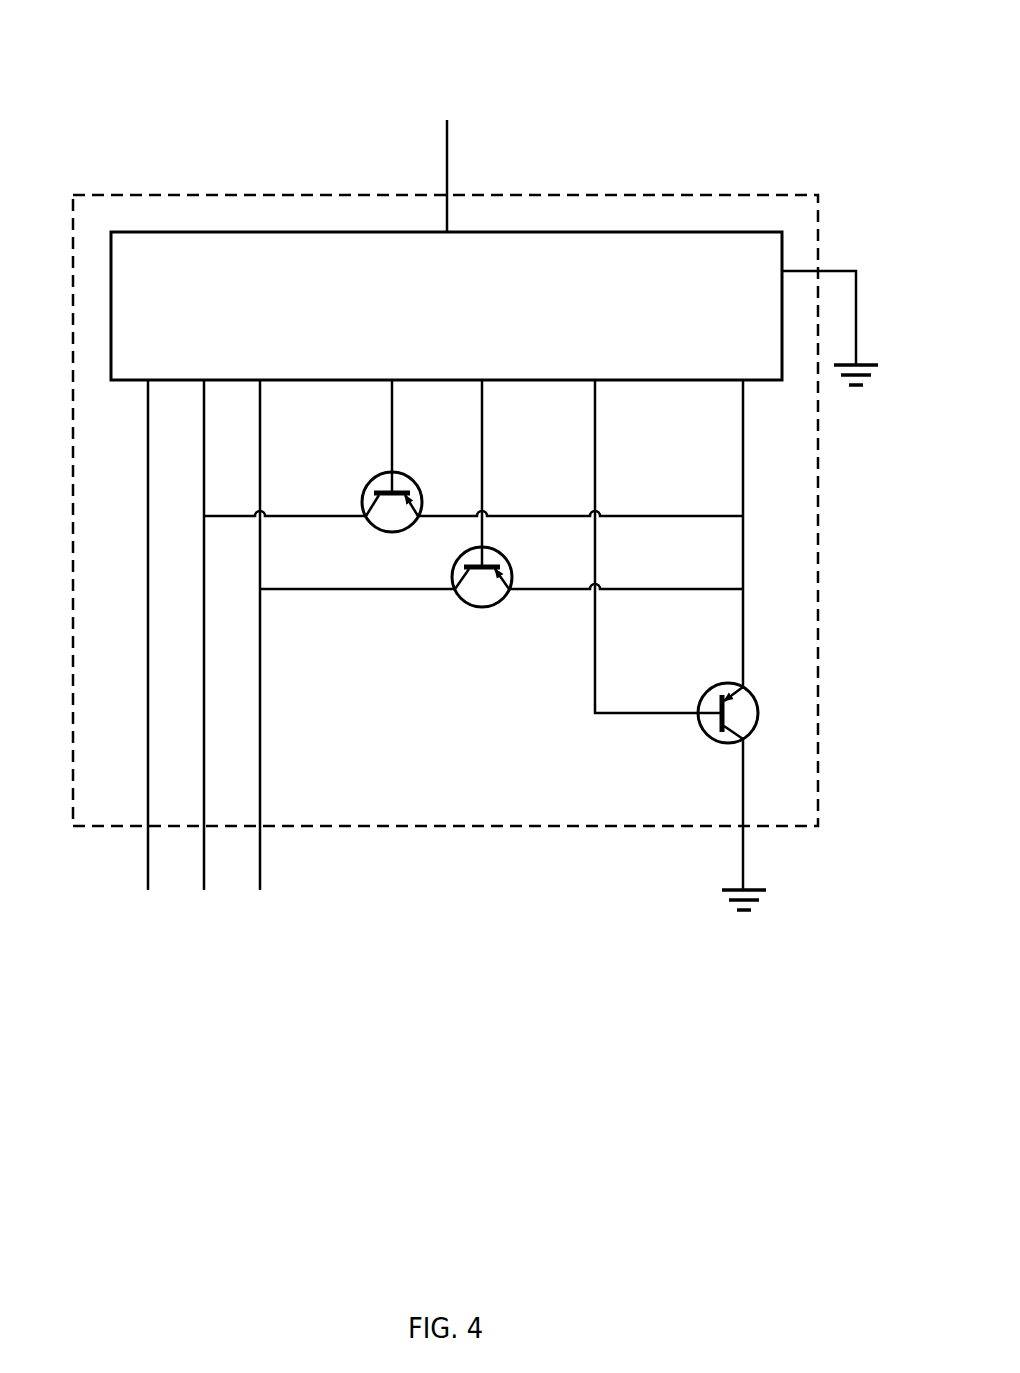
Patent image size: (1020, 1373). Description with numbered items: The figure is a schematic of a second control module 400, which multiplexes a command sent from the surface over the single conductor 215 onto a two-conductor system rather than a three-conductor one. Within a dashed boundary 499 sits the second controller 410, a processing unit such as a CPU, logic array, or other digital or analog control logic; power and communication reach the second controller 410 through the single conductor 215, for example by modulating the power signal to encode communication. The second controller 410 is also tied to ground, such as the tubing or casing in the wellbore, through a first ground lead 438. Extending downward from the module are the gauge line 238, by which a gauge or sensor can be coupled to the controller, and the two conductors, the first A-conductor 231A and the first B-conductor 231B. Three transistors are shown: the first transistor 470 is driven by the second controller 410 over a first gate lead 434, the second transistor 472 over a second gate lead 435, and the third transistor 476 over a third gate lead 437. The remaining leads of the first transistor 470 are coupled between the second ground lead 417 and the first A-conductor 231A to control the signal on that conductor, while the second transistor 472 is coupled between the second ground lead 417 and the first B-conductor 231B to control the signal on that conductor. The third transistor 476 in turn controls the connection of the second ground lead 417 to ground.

The second control module 400 is at (173, 42).
The integrated circuit boundary 499 is at (750, 195).
The second controller 410 is at (467, 318).
The single conductor 215 is at (447, 148).
The first ground lead 438 is at (856, 308).
The gauge line 238 is at (148, 492).
The first A-conductor 231A is at (204, 745).
The first B-conductor 231B is at (260, 655).
The first gate lead 434 is at (392, 434).
The second gate lead 435 is at (482, 465).
The third gate lead 437 is at (595, 483).
The second ground lead 417 is at (743, 492).
The first transistor 470 is at (392, 521).
The second transistor 472 is at (482, 596).
The third transistor 476 is at (755, 713).